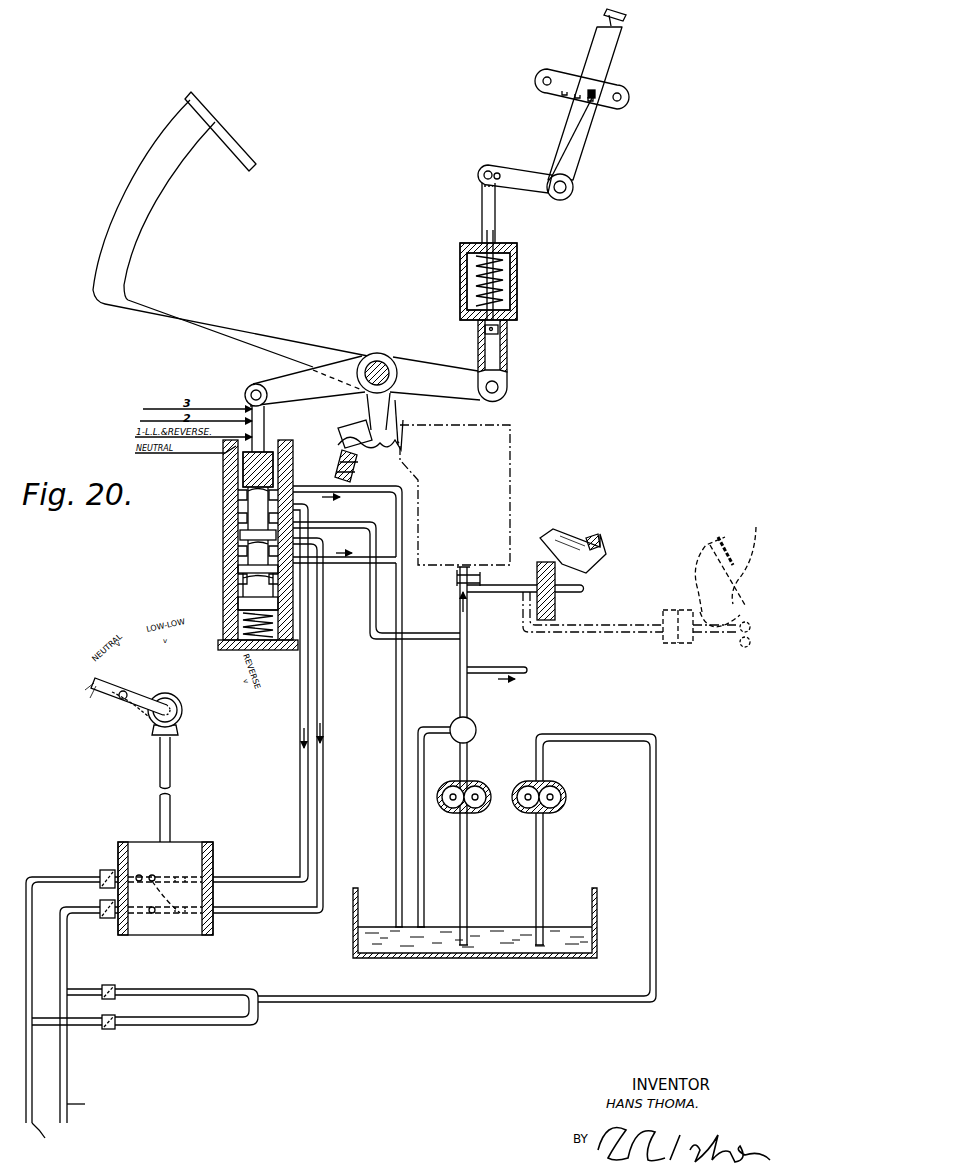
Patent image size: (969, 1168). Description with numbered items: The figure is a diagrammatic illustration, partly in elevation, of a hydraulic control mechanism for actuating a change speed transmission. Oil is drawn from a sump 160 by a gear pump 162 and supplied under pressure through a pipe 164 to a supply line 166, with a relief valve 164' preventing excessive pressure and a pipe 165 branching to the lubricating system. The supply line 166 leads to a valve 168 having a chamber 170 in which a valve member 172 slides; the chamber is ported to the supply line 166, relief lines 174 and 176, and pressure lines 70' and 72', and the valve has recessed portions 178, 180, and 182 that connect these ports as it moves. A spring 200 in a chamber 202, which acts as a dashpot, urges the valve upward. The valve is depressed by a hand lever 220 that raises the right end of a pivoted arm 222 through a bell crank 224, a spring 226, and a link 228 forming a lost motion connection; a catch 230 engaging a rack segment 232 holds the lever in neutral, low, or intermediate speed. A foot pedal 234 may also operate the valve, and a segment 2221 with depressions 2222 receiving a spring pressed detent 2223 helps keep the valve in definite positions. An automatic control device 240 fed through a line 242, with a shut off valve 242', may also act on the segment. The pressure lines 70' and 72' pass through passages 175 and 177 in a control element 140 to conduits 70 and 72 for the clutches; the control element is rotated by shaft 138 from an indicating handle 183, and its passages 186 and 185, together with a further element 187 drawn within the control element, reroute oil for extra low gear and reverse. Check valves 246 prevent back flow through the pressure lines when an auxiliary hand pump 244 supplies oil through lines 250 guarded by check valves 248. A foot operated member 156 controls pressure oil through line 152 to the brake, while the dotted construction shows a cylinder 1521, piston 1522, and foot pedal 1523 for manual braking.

The hand lever 220 is at (614, 42).
The rack segment 232 is at (558, 70).
The catch 230 is at (587, 97).
The bell crank 224 is at (527, 176).
The spring 226 is at (517, 288).
The link 228 is at (510, 340).
The pivoted arm 222 is at (433, 368).
The segment 2221 is at (365, 432).
The depressions 2222 is at (383, 458).
The spring pressed detent 2223 is at (342, 456).
The automatic control device 240 is at (527, 478).
The foot pedal 234 is at (170, 322).
The valve member 172 is at (266, 455).
The chamber 170 is at (285, 472).
The recessed portion 178 is at (240, 507).
The valve 168 is at (222, 527).
The recessed portion 180 is at (240, 561).
The recessed portion 182 is at (238, 582).
The spring 200 is at (262, 622).
The chamber 202 is at (262, 635).
The relief line 174 is at (358, 495).
The relief line 176 is at (349, 566).
The supply line 166 is at (371, 605).
The pressure line 70' is at (260, 693).
The pressure line 72' is at (286, 725).
The line 242 is at (451, 756).
The shut off valve 242' is at (482, 555).
The foot operated member 156 is at (525, 581).
The line 152 is at (487, 600).
The cylinder 1521 is at (672, 610).
The piston 1522 is at (705, 553).
The foot pedal 1523 is at (748, 557).
The pipe 165 is at (512, 660).
The pipe 164 is at (492, 695).
The relief valve 164' is at (466, 822).
The gear pump 162 is at (452, 818).
The auxiliary pump 244 is at (526, 814).
The sump 160 is at (355, 945).
The control element 140 is at (197, 838).
The passage 175 is at (214, 849).
The passage 186 is at (152, 866).
The port 187 is at (155, 876).
The passage 185 is at (150, 914).
The passage 177 is at (158, 918).
The shaft 138 is at (172, 768).
The indicating handle 183 is at (143, 697).
The conduit 70 is at (76, 1010).
The conduit 72 is at (114, 1015).
The check valves 246 is at (100, 905).
The check valves 248 is at (115, 1020).
The lines 250 is at (220, 988).